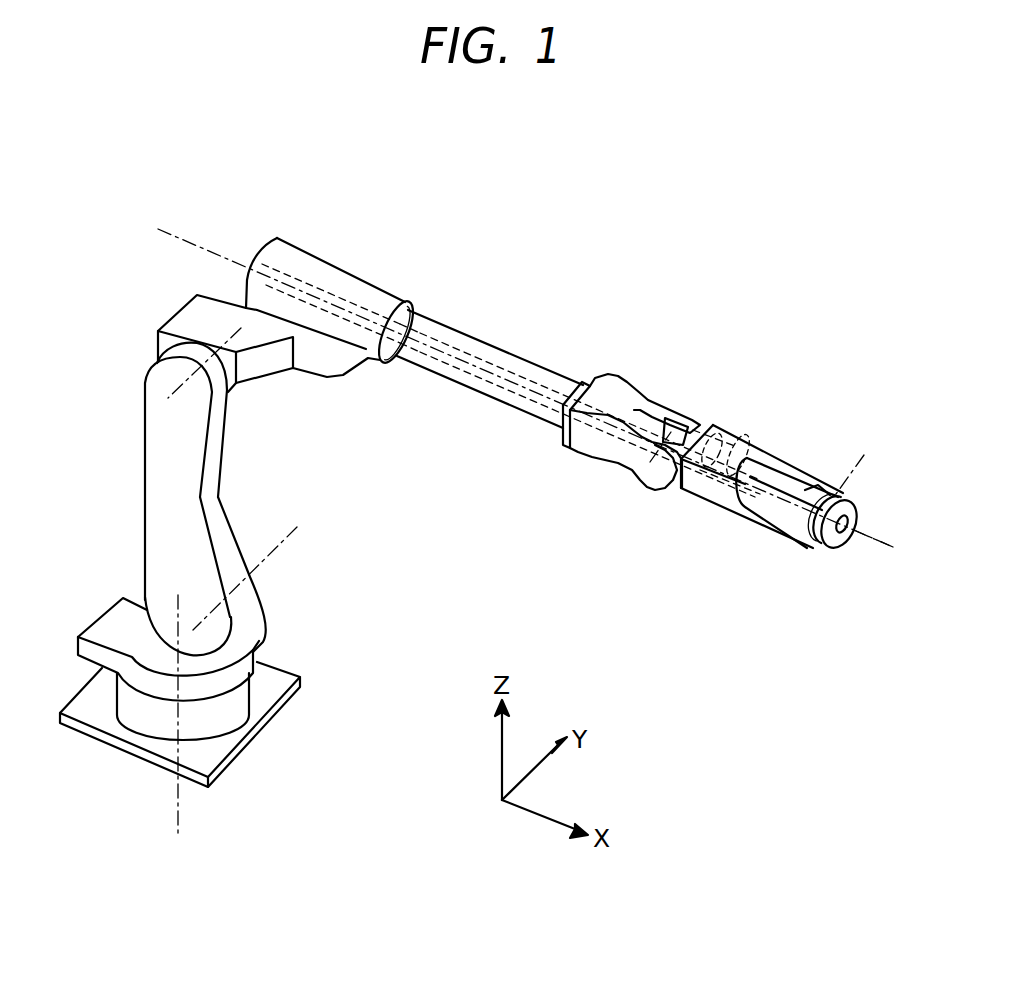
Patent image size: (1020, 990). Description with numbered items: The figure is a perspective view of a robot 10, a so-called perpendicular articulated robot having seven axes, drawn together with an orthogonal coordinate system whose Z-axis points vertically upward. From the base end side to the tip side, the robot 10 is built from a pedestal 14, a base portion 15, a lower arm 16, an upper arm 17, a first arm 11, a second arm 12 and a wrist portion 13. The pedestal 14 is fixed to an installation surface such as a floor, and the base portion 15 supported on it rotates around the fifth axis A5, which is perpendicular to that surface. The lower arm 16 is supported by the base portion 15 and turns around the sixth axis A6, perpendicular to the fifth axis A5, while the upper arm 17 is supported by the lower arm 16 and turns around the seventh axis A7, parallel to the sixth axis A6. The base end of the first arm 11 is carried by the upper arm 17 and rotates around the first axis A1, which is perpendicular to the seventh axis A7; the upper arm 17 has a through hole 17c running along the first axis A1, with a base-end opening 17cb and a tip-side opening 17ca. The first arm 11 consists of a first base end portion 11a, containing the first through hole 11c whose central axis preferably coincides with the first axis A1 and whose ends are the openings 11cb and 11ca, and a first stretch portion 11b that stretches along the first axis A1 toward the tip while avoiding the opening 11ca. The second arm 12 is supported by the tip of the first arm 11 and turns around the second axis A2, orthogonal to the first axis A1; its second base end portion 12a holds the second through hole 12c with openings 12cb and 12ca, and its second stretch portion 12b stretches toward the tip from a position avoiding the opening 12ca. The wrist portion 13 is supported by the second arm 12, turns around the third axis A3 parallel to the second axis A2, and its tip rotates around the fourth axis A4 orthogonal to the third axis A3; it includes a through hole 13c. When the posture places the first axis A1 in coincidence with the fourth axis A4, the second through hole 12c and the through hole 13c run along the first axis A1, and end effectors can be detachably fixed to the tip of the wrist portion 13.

The robot 10 is at (128, 257).
The first arm 11 is at (590, 517).
The first base end portion 11a is at (455, 382).
The first stretch portion 11b is at (622, 450).
The first through hole 11c is at (485, 359).
The opening 11ca is at (638, 433).
The opening 11cb is at (412, 318).
The second arm 12 is at (652, 513).
The second base end portion 12a is at (710, 486).
The second stretch portion 12b is at (767, 494).
The second through hole 12c is at (745, 457).
The opening 12ca is at (748, 468).
The opening 12cb is at (695, 426).
The wrist portion 13 is at (820, 544).
The through hole 13c is at (846, 538).
The pedestal 14 is at (236, 710).
The base portion 15 is at (112, 622).
The lower arm 16 is at (158, 453).
The upper arm 17 is at (288, 272).
The through hole 17c is at (327, 292).
The opening 17ca is at (410, 338).
The opening 17cb is at (276, 271).
The first axis A1 is at (380, 313).
The second axis A2 is at (648, 486).
The third axis A3 is at (858, 472).
The fourth axis A4 is at (896, 542).
The fifth axis A5 is at (173, 718).
The sixth axis A6 is at (273, 548).
The seventh axis A7 is at (174, 391).